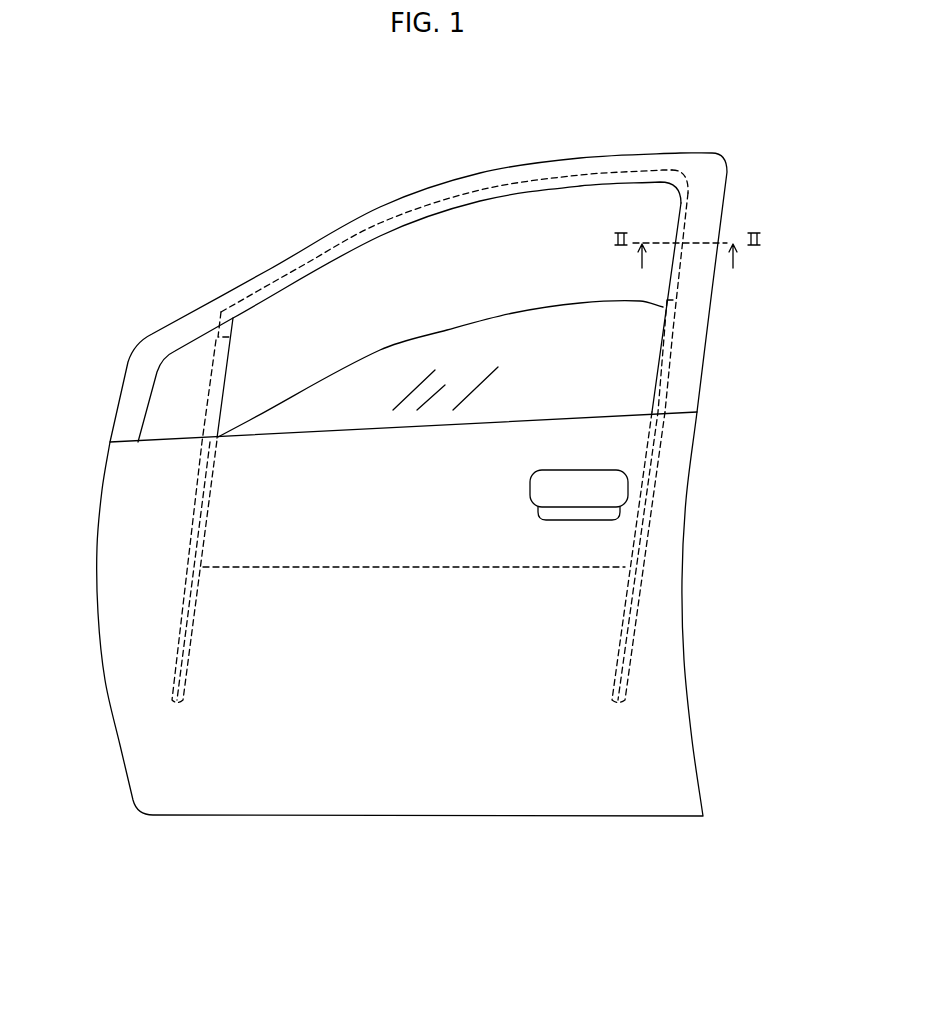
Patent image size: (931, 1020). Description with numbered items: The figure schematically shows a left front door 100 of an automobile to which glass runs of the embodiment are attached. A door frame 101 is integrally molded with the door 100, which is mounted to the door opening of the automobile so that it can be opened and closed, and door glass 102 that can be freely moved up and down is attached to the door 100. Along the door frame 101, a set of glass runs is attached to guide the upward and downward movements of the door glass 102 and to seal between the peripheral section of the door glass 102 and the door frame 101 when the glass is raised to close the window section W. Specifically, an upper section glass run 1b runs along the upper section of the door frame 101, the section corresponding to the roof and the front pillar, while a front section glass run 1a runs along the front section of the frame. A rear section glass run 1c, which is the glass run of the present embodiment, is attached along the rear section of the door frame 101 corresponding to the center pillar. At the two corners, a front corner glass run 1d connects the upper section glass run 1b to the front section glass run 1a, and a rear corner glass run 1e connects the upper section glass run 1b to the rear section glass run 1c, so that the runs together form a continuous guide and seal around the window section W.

The left front door 100 is at (743, 123).
The door frame 101 is at (267, 277).
The door glass 102 is at (610, 370).
The front section glass run 1a is at (213, 397).
The upper section glass run 1b is at (480, 200).
The rear section glass run 1c is at (673, 337).
The front corner glass run 1d is at (227, 307).
The rear corner glass run 1e is at (686, 187).
The window section W is at (418, 277).